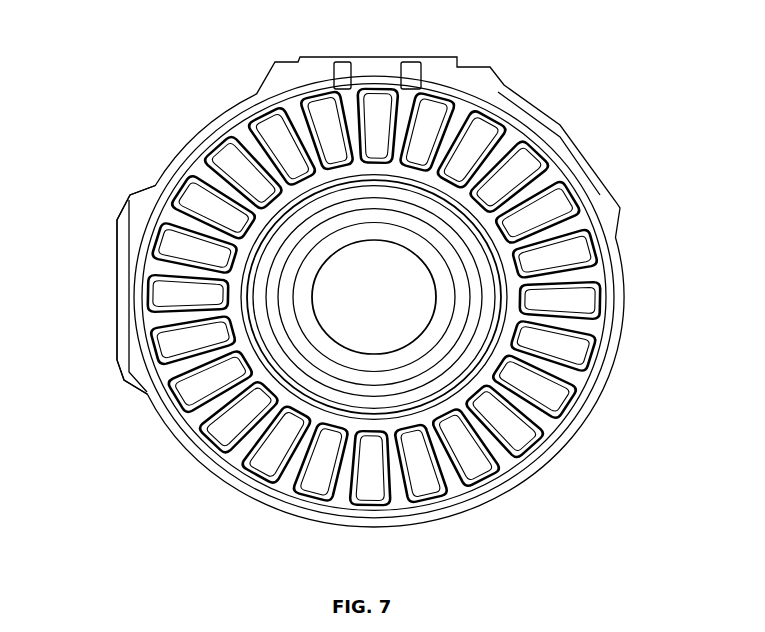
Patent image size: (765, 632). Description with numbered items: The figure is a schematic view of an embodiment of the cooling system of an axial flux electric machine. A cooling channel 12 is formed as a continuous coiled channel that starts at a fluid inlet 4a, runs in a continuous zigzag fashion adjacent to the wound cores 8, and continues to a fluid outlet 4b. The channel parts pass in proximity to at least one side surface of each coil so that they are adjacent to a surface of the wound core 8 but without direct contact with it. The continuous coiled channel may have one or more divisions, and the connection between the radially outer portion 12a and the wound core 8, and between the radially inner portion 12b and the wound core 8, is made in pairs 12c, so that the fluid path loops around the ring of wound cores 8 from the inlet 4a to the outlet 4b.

The fluid inlet 4a is at (339, 61).
The fluid outlet 4b is at (421, 62).
The wound core 8 is at (589, 298).
The cooling channel 12 is at (590, 217).
The radially outer portion 12a is at (153, 373).
The radially inner portion 12b is at (313, 421).
The pairs 12c is at (253, 433).